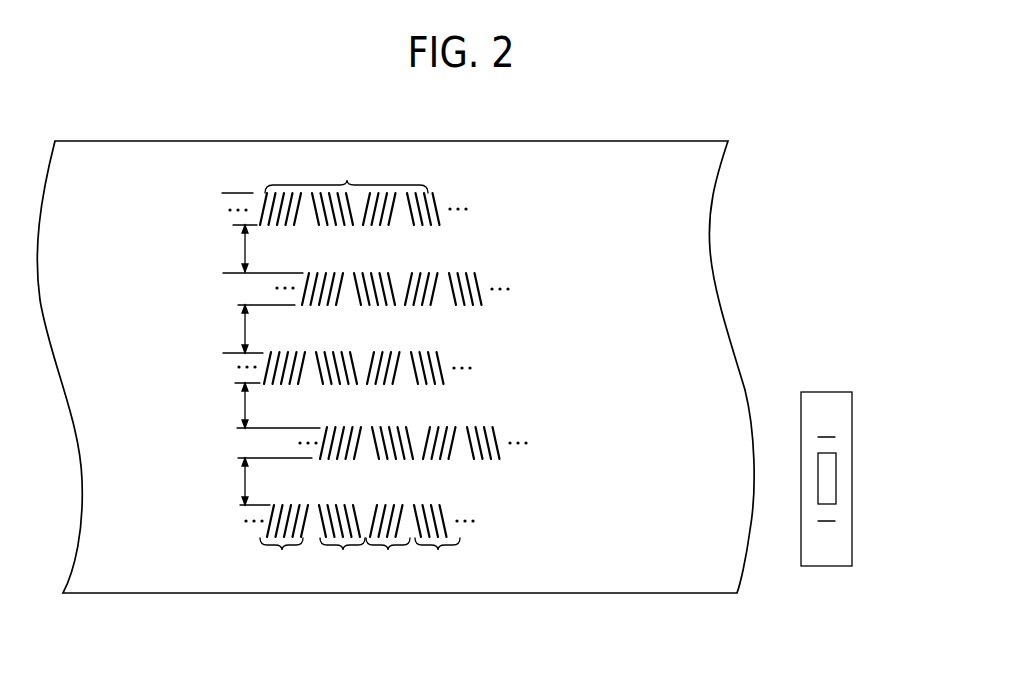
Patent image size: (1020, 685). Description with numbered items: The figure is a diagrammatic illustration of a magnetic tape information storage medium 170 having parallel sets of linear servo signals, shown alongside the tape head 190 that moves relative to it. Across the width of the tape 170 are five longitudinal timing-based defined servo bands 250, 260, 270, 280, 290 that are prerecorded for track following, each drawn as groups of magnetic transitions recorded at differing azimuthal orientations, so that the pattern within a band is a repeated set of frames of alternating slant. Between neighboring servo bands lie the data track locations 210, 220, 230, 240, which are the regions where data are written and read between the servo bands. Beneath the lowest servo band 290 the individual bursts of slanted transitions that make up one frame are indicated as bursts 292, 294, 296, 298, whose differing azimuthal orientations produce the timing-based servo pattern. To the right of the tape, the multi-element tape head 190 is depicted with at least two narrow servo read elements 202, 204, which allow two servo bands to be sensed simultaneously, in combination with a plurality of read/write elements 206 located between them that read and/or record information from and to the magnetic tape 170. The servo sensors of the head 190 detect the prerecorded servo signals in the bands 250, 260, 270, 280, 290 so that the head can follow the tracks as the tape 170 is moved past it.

The magnetic tape information storage medium 170 is at (413, 597).
The tape head 190 is at (826, 380).
The servo read element 202 is at (826, 533).
The servo read element 204 is at (830, 427).
The read/write elements 206 is at (830, 472).
The data track locations 210 is at (245, 245).
The data track locations 220 is at (245, 330).
The data track locations 230 is at (245, 403).
The data track locations 240 is at (245, 482).
The servo band 250 is at (446, 187).
The servo band 260 is at (484, 264).
The servo band 270 is at (444, 344).
The servo band 280 is at (543, 403).
The servo band 290 is at (456, 502).
The servo burst 292 is at (281, 560).
The servo burst 294 is at (343, 560).
The servo burst 296 is at (388, 560).
The servo burst 298 is at (437, 560).